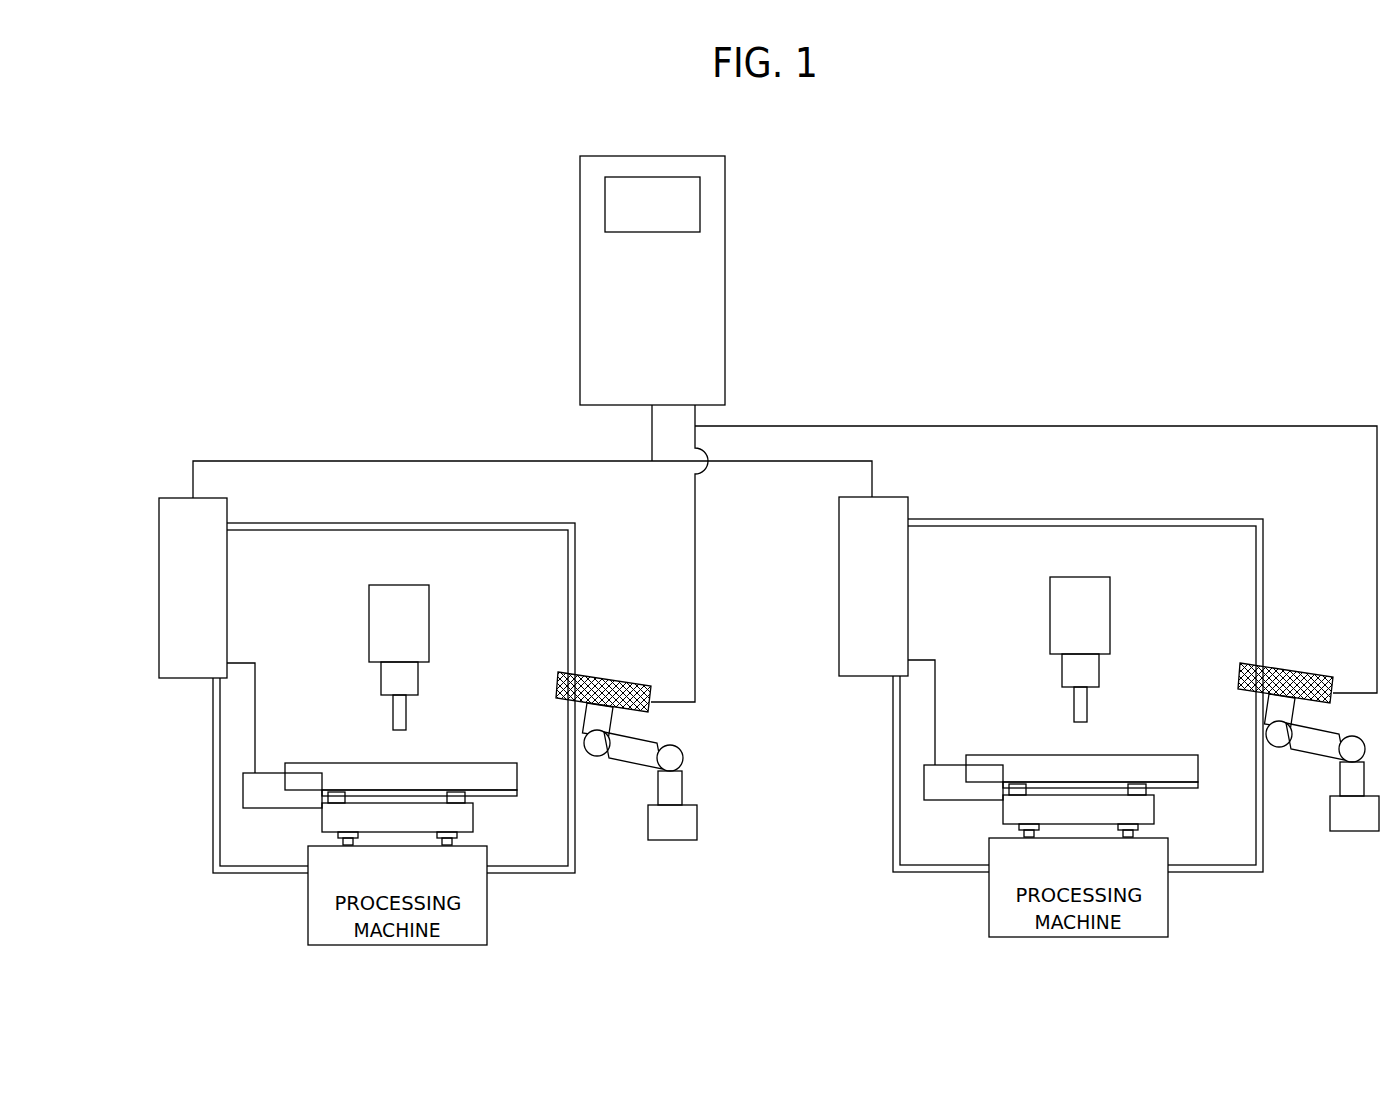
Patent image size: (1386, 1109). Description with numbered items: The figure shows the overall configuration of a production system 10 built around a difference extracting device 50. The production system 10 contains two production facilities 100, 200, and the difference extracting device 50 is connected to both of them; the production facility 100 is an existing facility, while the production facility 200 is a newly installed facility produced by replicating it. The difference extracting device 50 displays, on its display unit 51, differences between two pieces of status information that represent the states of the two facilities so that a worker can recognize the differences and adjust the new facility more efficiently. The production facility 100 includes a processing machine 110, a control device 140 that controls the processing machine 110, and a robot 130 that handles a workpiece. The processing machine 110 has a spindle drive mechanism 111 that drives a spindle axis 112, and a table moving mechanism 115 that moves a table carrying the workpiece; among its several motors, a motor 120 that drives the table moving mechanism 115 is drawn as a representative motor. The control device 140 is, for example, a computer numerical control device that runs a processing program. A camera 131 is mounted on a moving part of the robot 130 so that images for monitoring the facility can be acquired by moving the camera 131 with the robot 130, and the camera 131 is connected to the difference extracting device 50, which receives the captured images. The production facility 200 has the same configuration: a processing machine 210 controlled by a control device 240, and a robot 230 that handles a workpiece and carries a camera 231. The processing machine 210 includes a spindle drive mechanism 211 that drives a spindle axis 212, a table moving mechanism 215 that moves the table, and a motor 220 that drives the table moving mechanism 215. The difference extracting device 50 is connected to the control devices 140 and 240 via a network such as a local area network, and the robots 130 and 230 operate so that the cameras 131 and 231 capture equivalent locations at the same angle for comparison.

The production system 10 is at (1058, 318).
The difference extracting device 50 is at (727, 282).
The display unit 51 is at (700, 205).
The production facility 100 is at (545, 917).
The processing machine 110 is at (265, 875).
The spindle drive mechanism 111 is at (430, 620).
The spindle axis 112 is at (406, 712).
The table moving mechanism 115 is at (498, 810).
The motor 120 is at (283, 789).
The robot 130 is at (632, 772).
The camera 131 is at (627, 678).
The control device 140 is at (193, 678).
The production facility 200 is at (1205, 922).
The processing machine 210 is at (940, 873).
The spindle drive mechanism 211 is at (1116, 632).
The spindle axis 212 is at (1120, 713).
The table moving mechanism 215 is at (1100, 807).
The motor 220 is at (963, 812).
The robot 230 is at (1322, 773).
The camera 231 is at (1285, 652).
The control device 240 is at (839, 585).